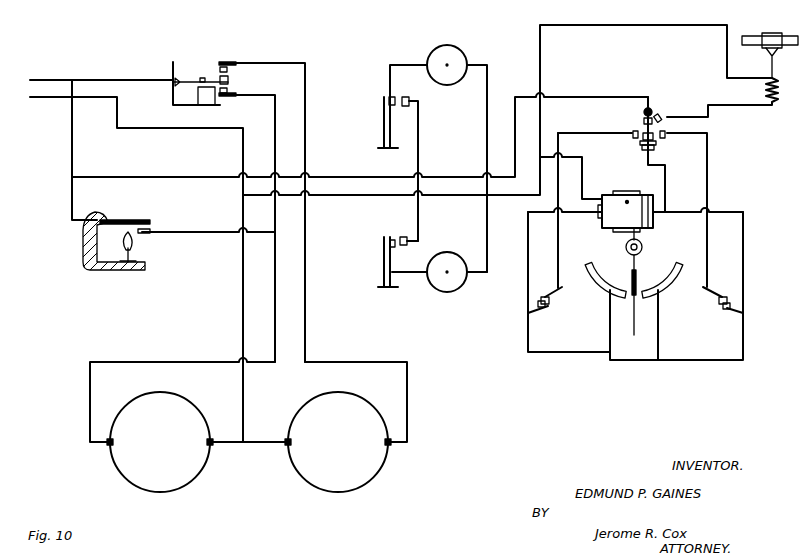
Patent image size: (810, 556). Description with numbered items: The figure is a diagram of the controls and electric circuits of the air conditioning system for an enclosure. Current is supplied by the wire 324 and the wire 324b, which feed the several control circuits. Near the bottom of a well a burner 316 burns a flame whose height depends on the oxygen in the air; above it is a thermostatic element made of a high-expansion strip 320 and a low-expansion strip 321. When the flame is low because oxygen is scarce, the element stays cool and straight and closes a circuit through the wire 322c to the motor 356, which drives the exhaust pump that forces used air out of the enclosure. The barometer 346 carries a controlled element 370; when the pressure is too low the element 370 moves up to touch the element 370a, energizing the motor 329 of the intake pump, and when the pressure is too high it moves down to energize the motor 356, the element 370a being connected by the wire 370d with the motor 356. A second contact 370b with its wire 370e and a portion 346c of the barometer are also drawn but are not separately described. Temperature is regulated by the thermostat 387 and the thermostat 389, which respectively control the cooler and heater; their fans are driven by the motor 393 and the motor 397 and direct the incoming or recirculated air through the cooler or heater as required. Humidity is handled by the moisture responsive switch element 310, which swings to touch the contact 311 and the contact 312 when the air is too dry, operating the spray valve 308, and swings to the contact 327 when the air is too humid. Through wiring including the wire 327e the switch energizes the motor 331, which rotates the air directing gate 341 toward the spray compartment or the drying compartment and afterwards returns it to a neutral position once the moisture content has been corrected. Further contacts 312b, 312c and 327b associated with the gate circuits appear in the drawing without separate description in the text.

The spray valve 308 is at (776, 36).
The moisture responsive switch element 310 is at (652, 108).
The contact 311 is at (661, 113).
The contact 312 is at (663, 138).
The contact plate 312b is at (726, 298).
The contact 312c is at (727, 312).
The burner 316 is at (133, 250).
The bimetallic strip of high specific expansion 320 is at (90, 234).
The bimetallic strip of low specific expansion 321 is at (140, 218).
The wire 322c is at (270, 366).
The wire 324 is at (62, 102).
The wire 324b is at (110, 80).
The contact 327 is at (634, 138).
The contact plate 327b is at (563, 302).
The wire 327e is at (547, 310).
The motor 329 is at (382, 462).
The motor 331 is at (640, 180).
The air directing gate 341 is at (636, 330).
The barometer 346 is at (256, 201).
The relay coil 346c is at (209, 97).
The motor 356 is at (194, 464).
The controlled element 370 is at (190, 80).
The element 370a is at (236, 60).
The relay contact 370b is at (236, 94).
The wire 370d is at (305, 92).
The conductor 370e is at (276, 126).
The thermostat 387 is at (383, 264).
The thermostat 389 is at (383, 124).
The motor 393 is at (460, 284).
The motor 397 is at (456, 52).